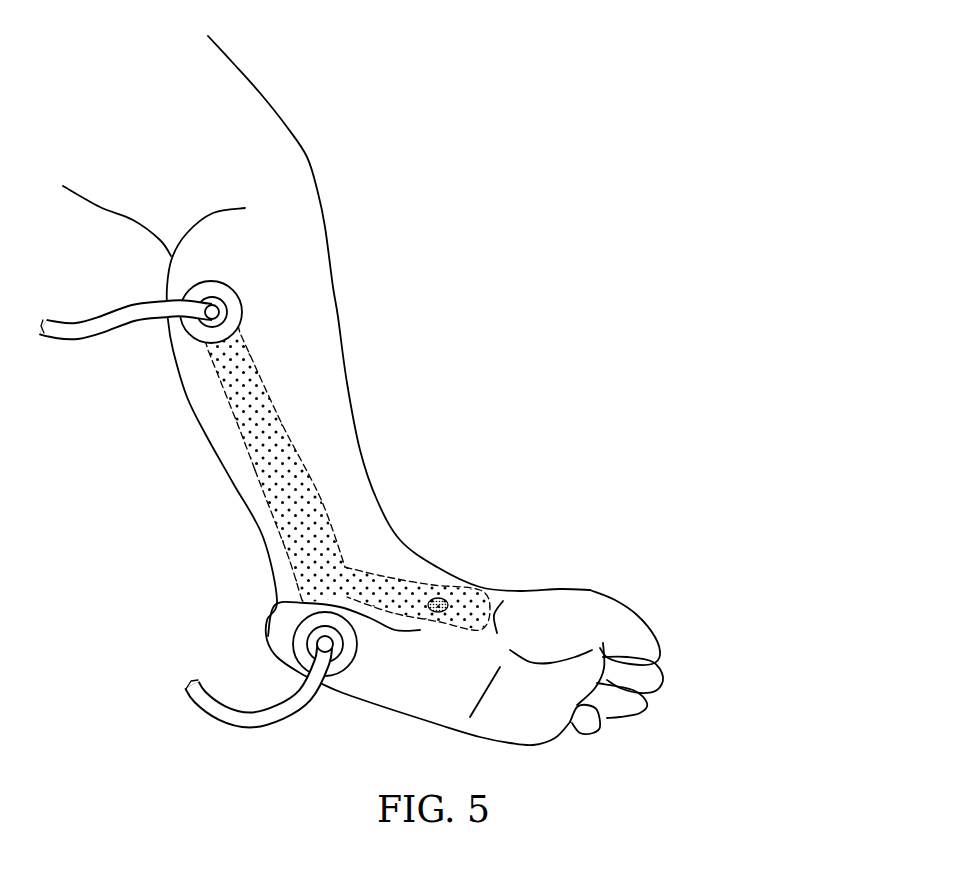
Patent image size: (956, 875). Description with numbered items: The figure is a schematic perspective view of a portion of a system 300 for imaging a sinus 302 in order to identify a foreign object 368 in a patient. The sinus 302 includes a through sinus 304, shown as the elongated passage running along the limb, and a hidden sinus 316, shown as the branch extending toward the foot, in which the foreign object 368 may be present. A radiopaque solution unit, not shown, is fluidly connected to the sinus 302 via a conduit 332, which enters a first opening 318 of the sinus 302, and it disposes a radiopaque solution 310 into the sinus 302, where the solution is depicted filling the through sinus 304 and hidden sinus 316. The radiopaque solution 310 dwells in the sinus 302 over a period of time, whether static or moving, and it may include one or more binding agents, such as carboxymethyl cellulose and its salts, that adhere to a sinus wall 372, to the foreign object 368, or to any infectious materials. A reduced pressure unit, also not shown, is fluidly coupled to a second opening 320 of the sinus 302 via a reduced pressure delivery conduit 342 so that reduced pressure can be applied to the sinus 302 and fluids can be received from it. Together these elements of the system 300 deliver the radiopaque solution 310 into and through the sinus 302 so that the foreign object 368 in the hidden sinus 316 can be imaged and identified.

The system 300 is at (478, 81).
The sinus 302 is at (243, 443).
The through sinus 304 is at (240, 360).
The radiopaque solution 310 is at (263, 400).
The hidden sinus 316 is at (393, 597).
The first opening 318 is at (233, 290).
The second opening 320 is at (345, 677).
The conduit 332 is at (77, 322).
The reduced pressure delivery conduit 342 is at (248, 728).
The foreign object 368 is at (438, 613).
The sinus wall 372 is at (283, 497).